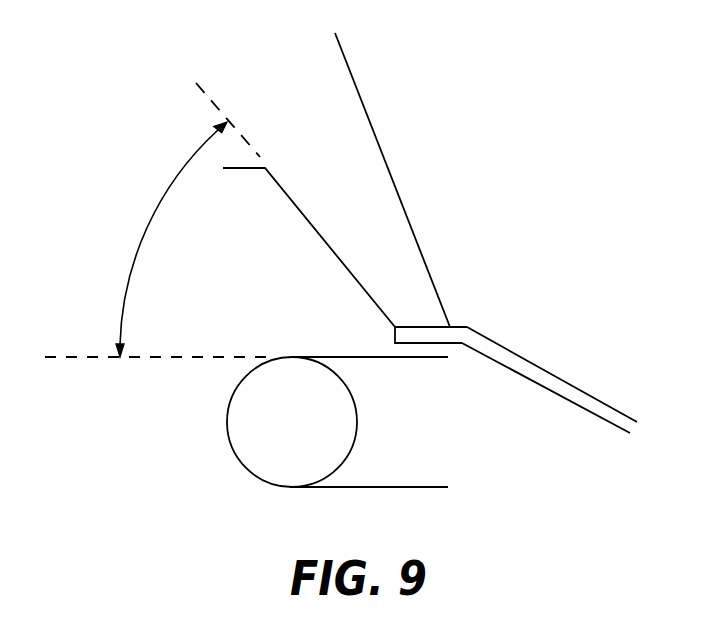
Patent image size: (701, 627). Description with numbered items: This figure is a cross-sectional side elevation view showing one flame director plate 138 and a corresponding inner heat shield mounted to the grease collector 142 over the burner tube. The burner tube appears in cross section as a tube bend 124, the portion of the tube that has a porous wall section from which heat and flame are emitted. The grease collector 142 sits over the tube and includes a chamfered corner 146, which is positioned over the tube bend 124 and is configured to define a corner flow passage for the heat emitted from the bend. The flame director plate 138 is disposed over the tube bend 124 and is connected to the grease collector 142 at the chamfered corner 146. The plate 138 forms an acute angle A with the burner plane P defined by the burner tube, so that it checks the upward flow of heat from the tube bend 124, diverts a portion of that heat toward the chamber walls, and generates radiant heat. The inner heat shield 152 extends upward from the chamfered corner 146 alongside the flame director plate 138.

The tube bend 124 is at (247, 468).
The flame director plate 138 is at (283, 190).
The grease collector 142 is at (565, 388).
The chamfered corner 146 is at (382, 335).
The support member 152 is at (366, 110).
The acute angle A is at (140, 240).
The burner plane P is at (95, 358).